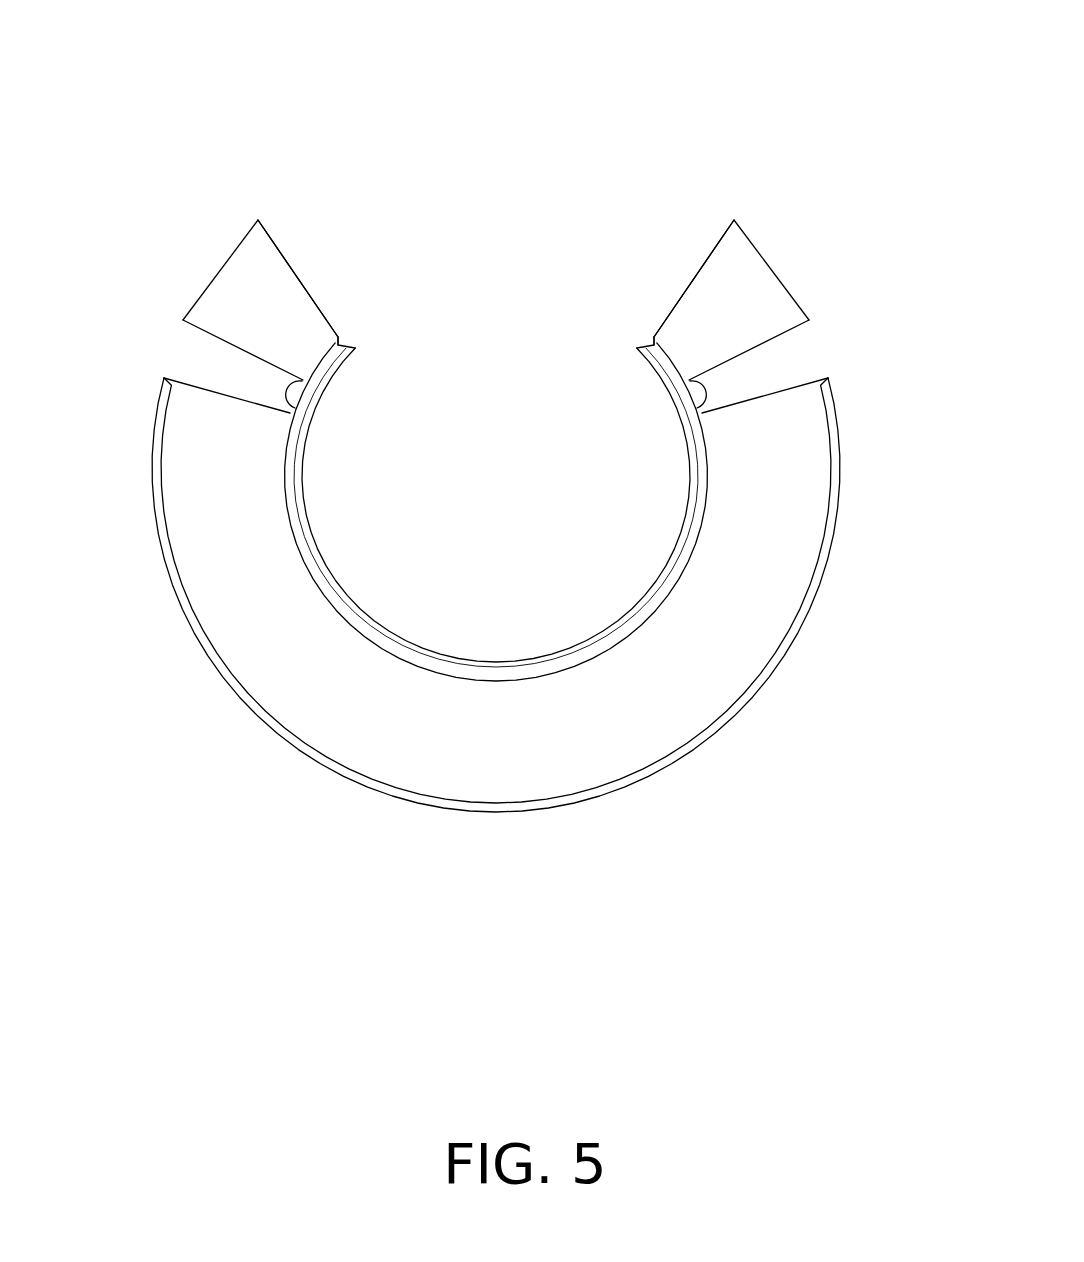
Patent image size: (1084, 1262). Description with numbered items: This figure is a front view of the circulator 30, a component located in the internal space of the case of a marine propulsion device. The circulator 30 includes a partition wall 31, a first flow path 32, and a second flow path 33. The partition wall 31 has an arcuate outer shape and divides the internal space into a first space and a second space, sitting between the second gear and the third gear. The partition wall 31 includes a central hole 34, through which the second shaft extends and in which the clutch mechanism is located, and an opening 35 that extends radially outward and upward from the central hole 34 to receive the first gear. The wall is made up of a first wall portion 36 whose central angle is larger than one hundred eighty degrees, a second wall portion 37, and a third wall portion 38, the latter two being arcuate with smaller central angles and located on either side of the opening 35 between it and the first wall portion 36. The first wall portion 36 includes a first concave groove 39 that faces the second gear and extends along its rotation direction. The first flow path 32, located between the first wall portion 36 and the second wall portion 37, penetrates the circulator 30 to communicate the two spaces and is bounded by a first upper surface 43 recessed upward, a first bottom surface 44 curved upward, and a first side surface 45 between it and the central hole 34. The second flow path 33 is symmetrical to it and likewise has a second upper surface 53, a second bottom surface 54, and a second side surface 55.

The circulator 30 is at (243, 138).
The partition wall 31 is at (447, 827).
The first flow path 32 is at (817, 350).
The second flow path 33 is at (175, 350).
The central hole 34 is at (303, 490).
The opening 35 is at (498, 248).
The first wall portion 36 is at (708, 738).
The second wall portion 37 is at (716, 262).
The third wall portion 38 is at (276, 262).
The first concave groove 39 is at (545, 748).
The first upper surface 43 is at (777, 342).
The first bottom surface 44 is at (785, 387).
The first side surface 45 is at (687, 385).
The second upper surface 53 is at (215, 342).
The second bottom surface 54 is at (207, 387).
The second side surface 55 is at (310, 387).